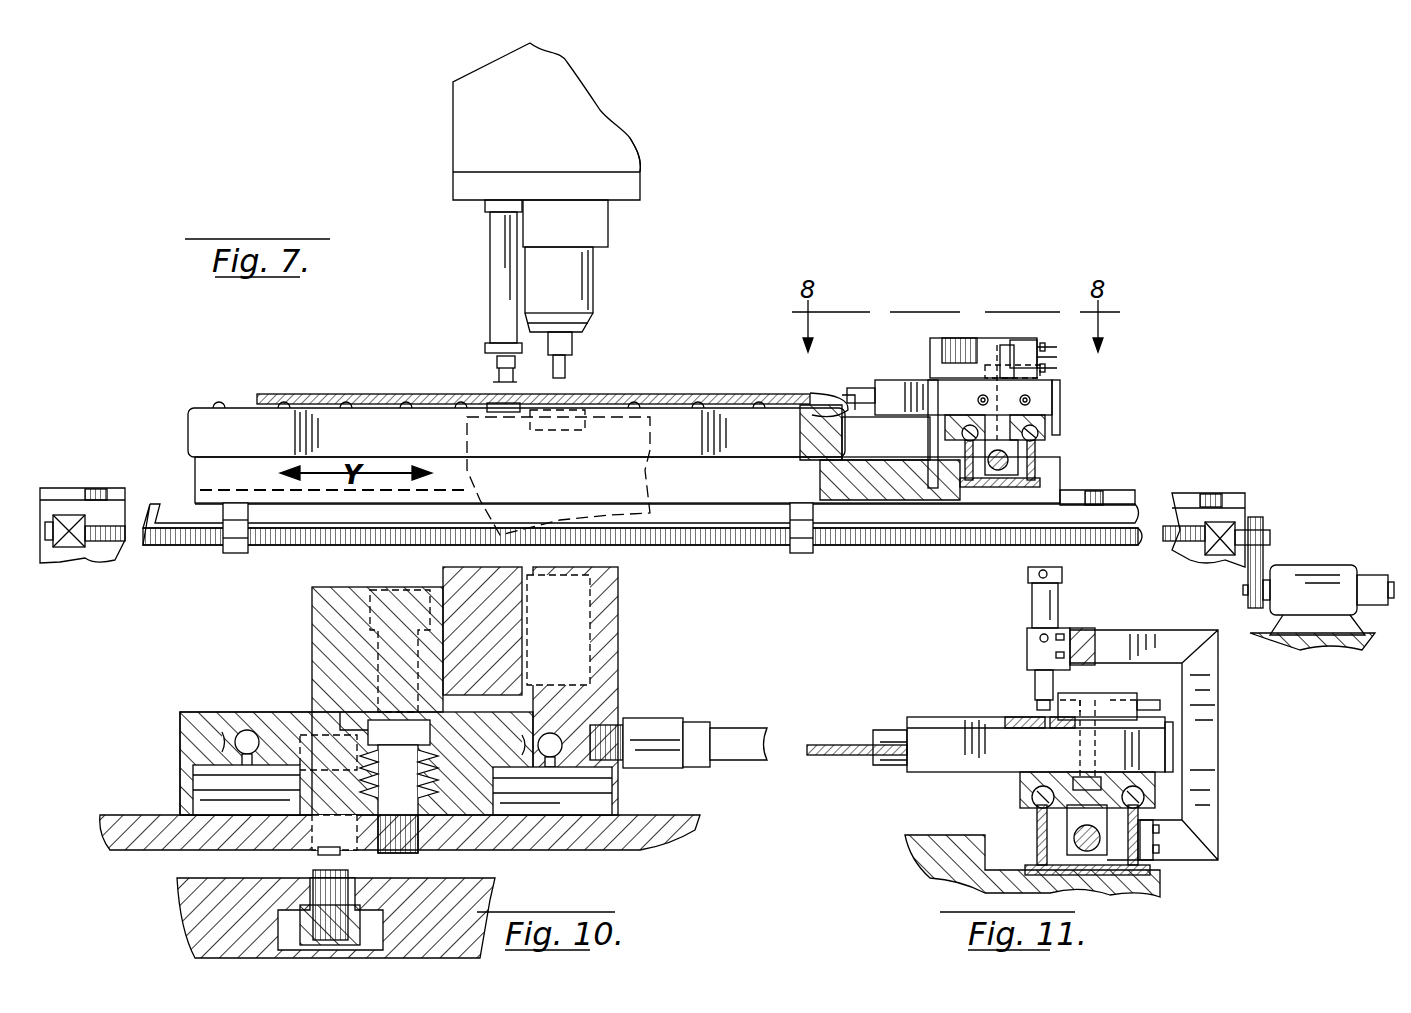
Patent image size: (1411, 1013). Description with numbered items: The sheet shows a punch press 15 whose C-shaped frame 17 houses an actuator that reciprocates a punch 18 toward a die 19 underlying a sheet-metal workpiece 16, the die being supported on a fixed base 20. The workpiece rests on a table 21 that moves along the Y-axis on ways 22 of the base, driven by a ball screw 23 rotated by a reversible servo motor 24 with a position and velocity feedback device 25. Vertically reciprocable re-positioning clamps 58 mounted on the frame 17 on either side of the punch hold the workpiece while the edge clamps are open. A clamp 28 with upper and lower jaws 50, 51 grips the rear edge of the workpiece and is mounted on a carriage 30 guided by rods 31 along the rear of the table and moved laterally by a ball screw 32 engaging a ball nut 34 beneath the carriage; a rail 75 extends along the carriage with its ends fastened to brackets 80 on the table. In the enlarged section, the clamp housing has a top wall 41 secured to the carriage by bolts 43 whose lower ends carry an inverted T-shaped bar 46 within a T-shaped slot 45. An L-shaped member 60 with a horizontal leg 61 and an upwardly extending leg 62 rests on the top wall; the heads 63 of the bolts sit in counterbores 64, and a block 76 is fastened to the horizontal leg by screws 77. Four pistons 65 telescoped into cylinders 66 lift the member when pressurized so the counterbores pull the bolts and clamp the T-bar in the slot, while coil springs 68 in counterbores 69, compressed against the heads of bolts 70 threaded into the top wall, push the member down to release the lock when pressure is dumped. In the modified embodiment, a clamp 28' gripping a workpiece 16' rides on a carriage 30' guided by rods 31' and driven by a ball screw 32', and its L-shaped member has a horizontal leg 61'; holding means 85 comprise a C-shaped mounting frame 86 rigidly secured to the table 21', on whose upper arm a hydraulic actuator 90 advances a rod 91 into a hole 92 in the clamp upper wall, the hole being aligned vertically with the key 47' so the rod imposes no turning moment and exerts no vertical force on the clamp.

In FIG. 7, the punch press 15 is at (448, 103).
In FIG. 7, the frame 17 is at (625, 150).
In FIG. 7, the re-positioning clamps 58 is at (495, 365).
In FIG. 7, the punch 18 is at (570, 362).
In FIG. 7, the workpiece 16 is at (533, 371).
In FIG. 7, the die 19 is at (592, 393).
In FIG. 7, the table 21 is at (587, 454).
In FIG. 7, the fixed base 20 is at (655, 484).
In FIG. 7, the ball screw 23 is at (880, 548).
In FIG. 7, the ways 22 is at (85, 488).
In FIG. 7, the reversible servo motor 24 is at (1318, 565).
In FIG. 7, the position and velocity feedback device 25 is at (1378, 575).
In FIG. 7, the clamp 28 is at (880, 409).
In FIG. 10, the clamp 28 is at (197, 819).
In FIG. 7, the upper jaw 50 is at (860, 386).
In FIG. 7, the lower jaw 51 is at (835, 418).
In FIG. 7, the brackets 80 is at (958, 338).
In FIG. 7, the rail 75 is at (1020, 340).
In FIG. 10, the rail 75 is at (452, 585).
In FIG. 7, the L-shaped member 60 is at (1058, 355).
In FIG. 10, the L-shaped member 60 is at (254, 700).
In FIG. 7, the bolts 43 is at (1052, 393).
In FIG. 10, the bolts 43 is at (313, 885).
In FIG. 7, the carriage 30 is at (1033, 445).
In FIG. 10, the carriage 30 is at (315, 918).
In FIG. 7, the ball nut 34 is at (945, 478).
In FIG. 7, the rods 31 is at (993, 434).
In FIG. 7, the ball screw 32 is at (1022, 460).
In FIG. 10, the horizontal leg 61 is at (231, 739).
In FIG. 10, the block 76 is at (312, 612).
In FIG. 10, the screws 77 is at (340, 638).
In FIG. 10, the heads 63 is at (336, 712).
In FIG. 10, the counterbores 64 is at (312, 730).
In FIG. 10, the upwardly extending leg 62 is at (612, 592).
In FIG. 10, the pistons 65 is at (215, 747).
In FIG. 10, the cylinders 66 is at (195, 780).
In FIG. 10, the coil springs 68 is at (430, 735).
In FIG. 10, the counterbore 69 is at (438, 770).
In FIG. 10, the bolt 70 is at (410, 812).
In FIG. 10, the top wall 41 is at (160, 830).
In FIG. 11, the top wall 41 is at (958, 716).
In FIG. 10, the slot 45 is at (300, 920).
In FIG. 10, the inverted T-shaped bar 46 is at (375, 920).
In FIG. 11, the means 85 is at (1075, 622).
In FIG. 11, the C-shaped mounting frame 86 is at (1212, 735).
In FIG. 11, the hydraulic actuator 90 is at (1030, 610).
In FIG. 11, the rod 91 is at (1035, 685).
In FIG. 11, the hole 92 is at (1040, 715).
In FIG. 11, the clamp 28' is at (890, 689).
In FIG. 11, the workpiece 16' is at (856, 730).
In FIG. 11, the horizontal leg 61' is at (1115, 694).
In FIG. 11, the key 47' is at (1048, 745).
In FIG. 11, the carriage 30' is at (1052, 790).
In FIG. 11, the rods 31' is at (1111, 801).
In FIG. 11, the ball screw 32' is at (1077, 840).
In FIG. 11, the table 21' is at (1014, 866).